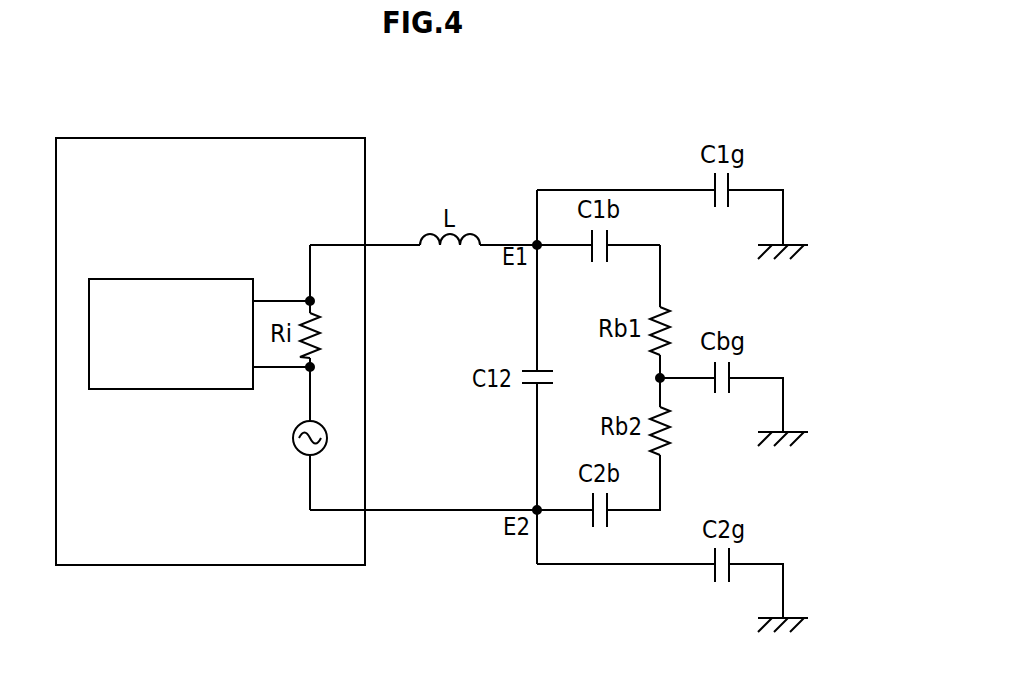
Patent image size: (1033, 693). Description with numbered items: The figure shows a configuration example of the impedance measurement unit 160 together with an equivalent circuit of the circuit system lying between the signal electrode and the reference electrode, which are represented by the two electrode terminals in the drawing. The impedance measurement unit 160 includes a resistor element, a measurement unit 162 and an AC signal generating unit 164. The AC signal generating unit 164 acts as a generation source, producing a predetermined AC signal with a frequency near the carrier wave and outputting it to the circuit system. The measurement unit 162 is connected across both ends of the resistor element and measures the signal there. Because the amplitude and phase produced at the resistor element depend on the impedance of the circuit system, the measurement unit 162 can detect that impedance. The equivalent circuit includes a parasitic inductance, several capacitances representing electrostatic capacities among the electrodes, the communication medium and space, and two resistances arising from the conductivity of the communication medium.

The impedance measurement unit 160 is at (283, 137).
The measurement unit 162 is at (172, 278).
The AC signal generating unit 164 is at (308, 457).